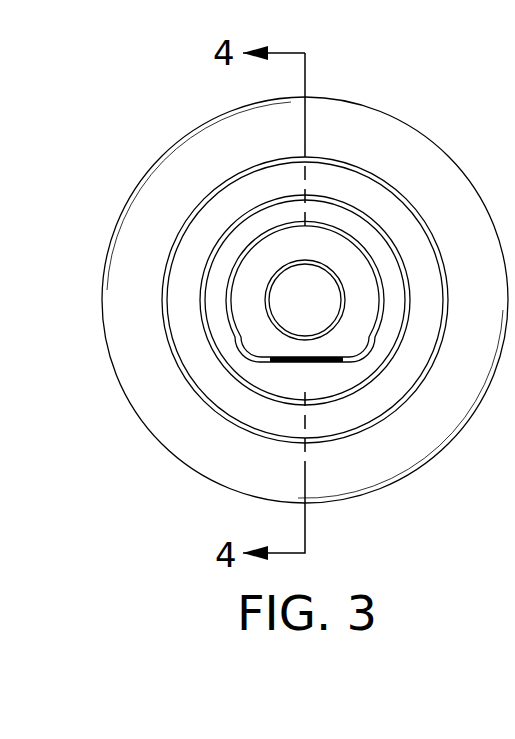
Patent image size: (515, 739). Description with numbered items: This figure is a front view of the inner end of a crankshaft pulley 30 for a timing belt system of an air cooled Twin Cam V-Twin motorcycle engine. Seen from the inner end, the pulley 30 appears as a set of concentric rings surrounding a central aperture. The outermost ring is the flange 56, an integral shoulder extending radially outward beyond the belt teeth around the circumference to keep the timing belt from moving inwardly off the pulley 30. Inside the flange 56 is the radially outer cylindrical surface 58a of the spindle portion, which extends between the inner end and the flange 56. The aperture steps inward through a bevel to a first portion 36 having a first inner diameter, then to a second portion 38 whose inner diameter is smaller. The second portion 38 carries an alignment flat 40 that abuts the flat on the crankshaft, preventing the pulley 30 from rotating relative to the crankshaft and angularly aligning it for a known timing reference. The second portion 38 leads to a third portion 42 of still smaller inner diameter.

The crankshaft pulley 30 is at (420, 93).
The flange 56 is at (424, 464).
The radially outer cylindrical surface 58a is at (360, 165).
The first portion 36 is at (256, 388).
The second portion 38 is at (243, 257).
The alignment flat 40 is at (334, 355).
The third portion 42 is at (270, 302).